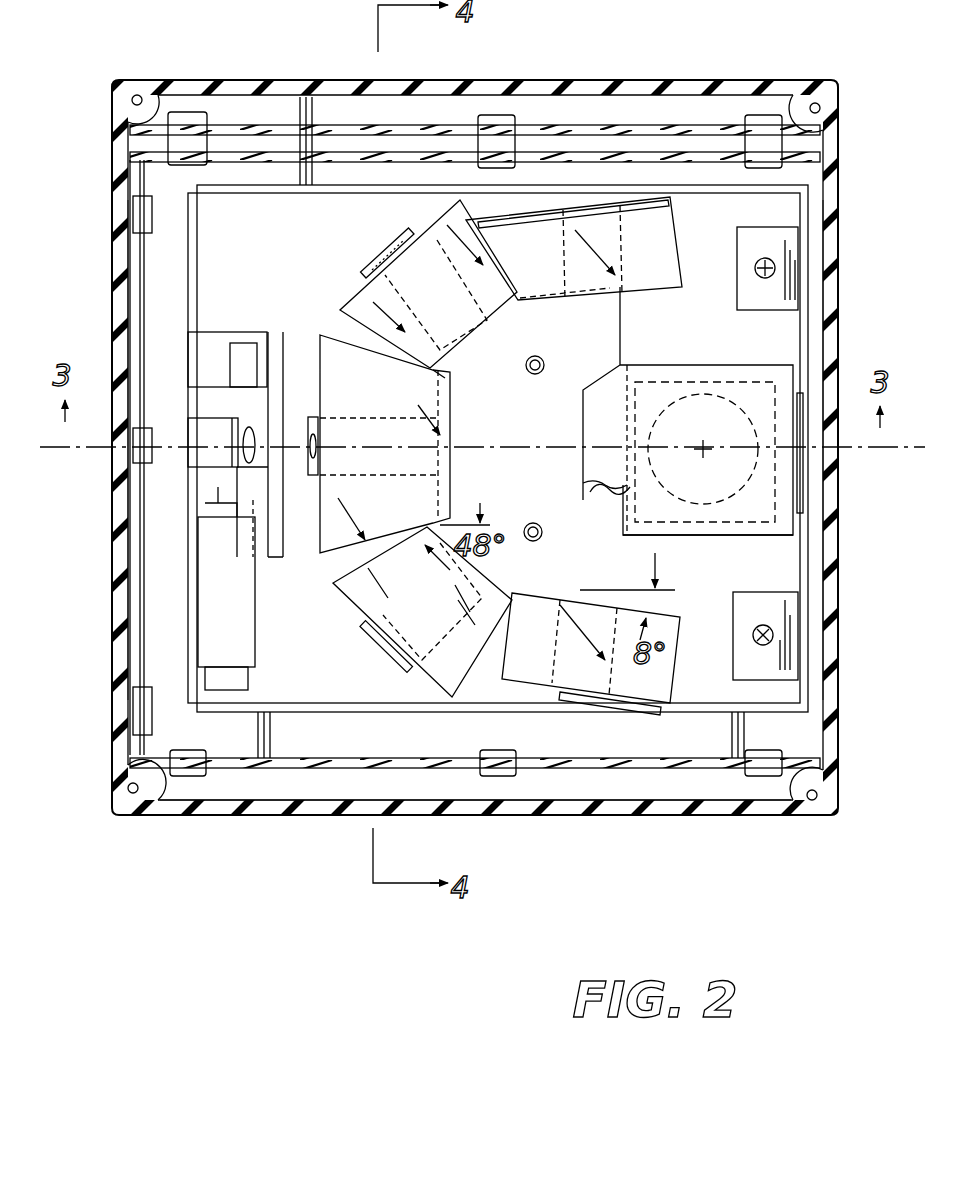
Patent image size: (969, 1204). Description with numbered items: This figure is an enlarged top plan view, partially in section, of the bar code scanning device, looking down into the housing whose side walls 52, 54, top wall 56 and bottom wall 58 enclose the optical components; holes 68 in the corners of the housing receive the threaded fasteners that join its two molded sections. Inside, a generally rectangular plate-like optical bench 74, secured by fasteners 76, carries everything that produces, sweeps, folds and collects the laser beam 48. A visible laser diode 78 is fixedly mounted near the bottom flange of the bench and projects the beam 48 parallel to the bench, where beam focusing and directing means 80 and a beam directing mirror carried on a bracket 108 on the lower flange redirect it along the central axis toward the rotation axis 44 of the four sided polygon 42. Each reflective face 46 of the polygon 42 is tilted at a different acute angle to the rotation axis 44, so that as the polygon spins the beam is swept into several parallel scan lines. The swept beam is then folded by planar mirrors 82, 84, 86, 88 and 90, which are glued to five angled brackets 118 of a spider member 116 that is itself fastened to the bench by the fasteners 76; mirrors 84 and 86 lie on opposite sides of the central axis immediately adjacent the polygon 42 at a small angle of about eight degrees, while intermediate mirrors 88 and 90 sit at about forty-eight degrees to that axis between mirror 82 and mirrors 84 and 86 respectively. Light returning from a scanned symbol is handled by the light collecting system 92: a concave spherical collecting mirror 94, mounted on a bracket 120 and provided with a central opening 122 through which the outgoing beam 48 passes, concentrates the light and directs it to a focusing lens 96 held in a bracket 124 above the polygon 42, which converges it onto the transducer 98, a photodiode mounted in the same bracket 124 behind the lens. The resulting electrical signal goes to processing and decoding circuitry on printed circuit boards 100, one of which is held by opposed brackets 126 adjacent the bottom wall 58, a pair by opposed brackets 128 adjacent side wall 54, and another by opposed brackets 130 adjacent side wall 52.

The four sided polygon 42 is at (660, 533).
The rotation axis 44 is at (703, 449).
The face 46 is at (775, 385).
The laser beam 48 is at (218, 490).
The side wall 52 is at (668, 815).
The side wall 54 is at (590, 86).
The top wall 56 is at (838, 525).
The bottom wall 58 is at (124, 246).
The holes 68 is at (140, 92).
The optical bench 74 is at (330, 662).
The fasteners 76 is at (540, 357).
The visible laser diode 78 is at (232, 633).
The beam focusing and directing means 80 is at (253, 420).
The beam-folding reflecting member 82 is at (448, 374).
The beam-folding reflecting member 84 is at (574, 248).
The beam-folding reflecting member 86 is at (591, 648).
The beam-folding reflecting member 88 is at (428, 284).
The beam-folding reflecting member 90 is at (422, 612).
The light collecting system 92 is at (645, 365).
The collecting mirror 94 is at (268, 430).
The focusing lens 96 is at (605, 490).
The transducer 98 is at (803, 395).
The printed circuit boards 100 is at (343, 150).
The bracket 108 is at (235, 340).
The spider member 116 is at (499, 411).
The angled brackets 118 is at (393, 250).
The bracket 120 is at (205, 420).
The central opening 122 is at (262, 435).
The bracket 124 is at (798, 270).
The brackets 126 is at (133, 208).
The brackets 128 is at (198, 114).
The brackets 130 is at (205, 776).